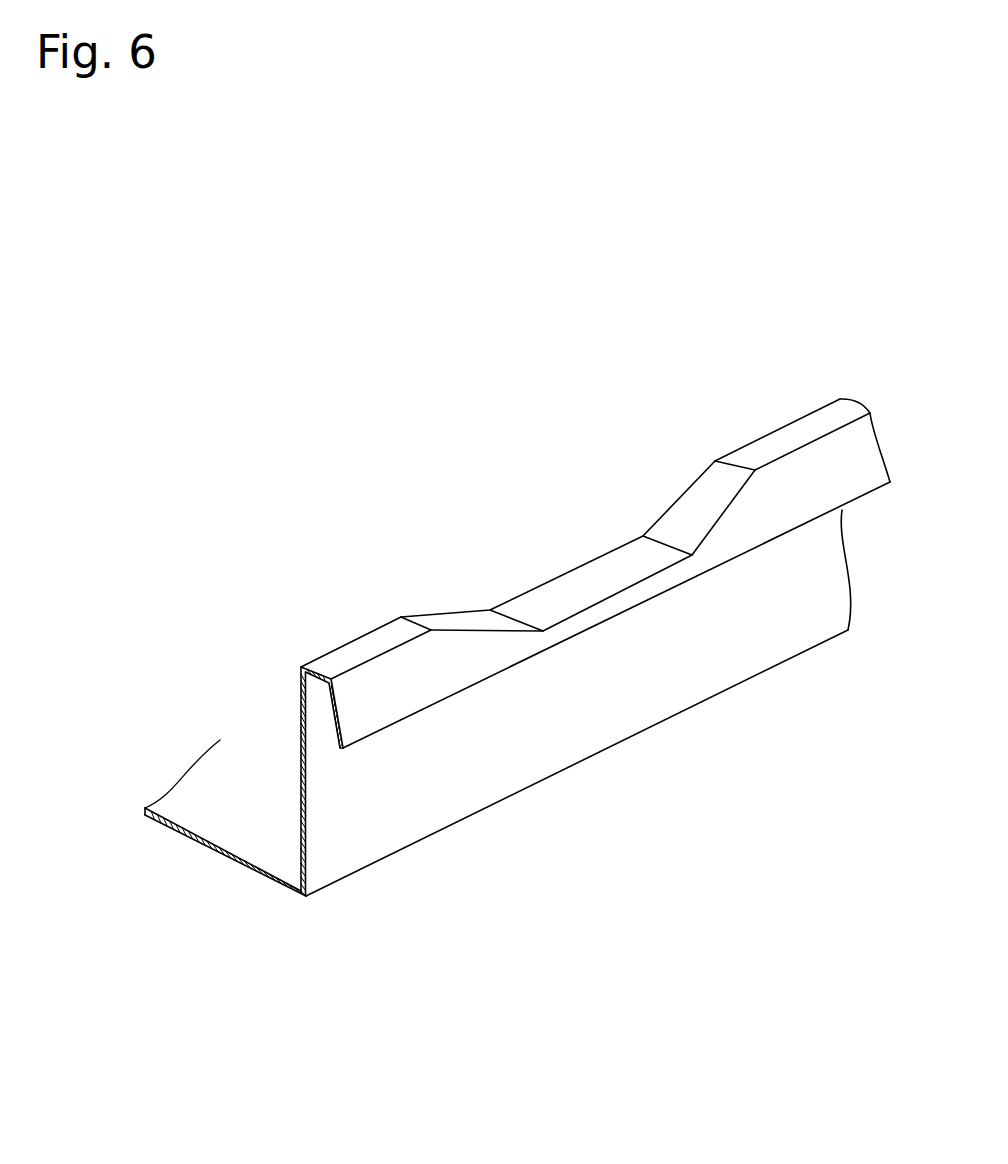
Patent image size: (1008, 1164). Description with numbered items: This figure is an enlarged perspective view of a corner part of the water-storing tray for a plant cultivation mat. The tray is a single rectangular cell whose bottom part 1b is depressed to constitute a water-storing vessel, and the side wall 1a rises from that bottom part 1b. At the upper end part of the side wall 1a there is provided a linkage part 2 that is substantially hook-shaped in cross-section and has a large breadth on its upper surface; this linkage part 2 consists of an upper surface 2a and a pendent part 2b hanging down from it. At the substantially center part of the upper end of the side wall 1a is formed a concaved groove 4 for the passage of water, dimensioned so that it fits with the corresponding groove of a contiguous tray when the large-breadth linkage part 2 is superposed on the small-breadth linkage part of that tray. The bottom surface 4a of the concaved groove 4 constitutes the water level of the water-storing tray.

The side wall 1a is at (597, 708).
The bottom part 1b is at (240, 817).
The linkage part 2 is at (778, 428).
The upper surface 2a is at (367, 652).
The pendent part 2b is at (843, 473).
The concaved groove 4 is at (598, 556).
The bottom surface 4a is at (550, 607).